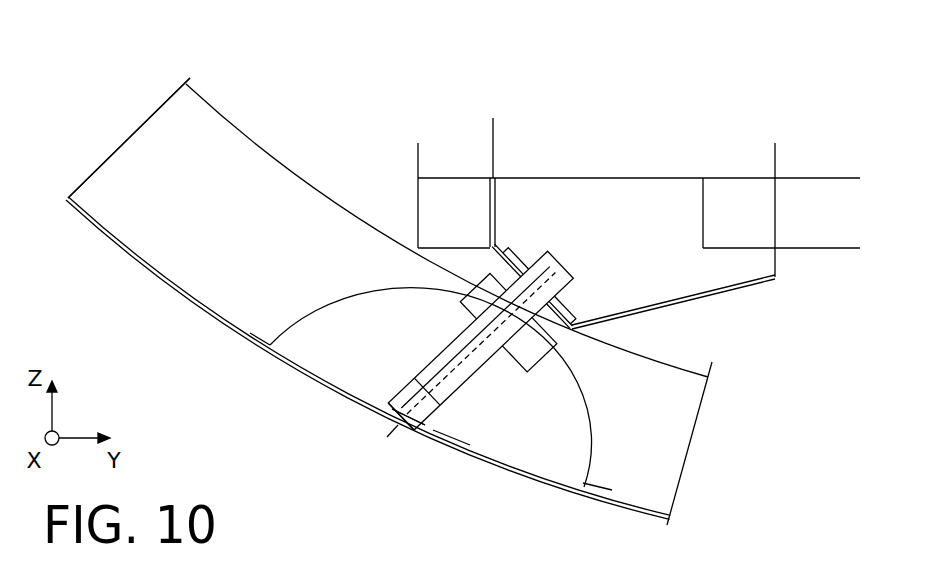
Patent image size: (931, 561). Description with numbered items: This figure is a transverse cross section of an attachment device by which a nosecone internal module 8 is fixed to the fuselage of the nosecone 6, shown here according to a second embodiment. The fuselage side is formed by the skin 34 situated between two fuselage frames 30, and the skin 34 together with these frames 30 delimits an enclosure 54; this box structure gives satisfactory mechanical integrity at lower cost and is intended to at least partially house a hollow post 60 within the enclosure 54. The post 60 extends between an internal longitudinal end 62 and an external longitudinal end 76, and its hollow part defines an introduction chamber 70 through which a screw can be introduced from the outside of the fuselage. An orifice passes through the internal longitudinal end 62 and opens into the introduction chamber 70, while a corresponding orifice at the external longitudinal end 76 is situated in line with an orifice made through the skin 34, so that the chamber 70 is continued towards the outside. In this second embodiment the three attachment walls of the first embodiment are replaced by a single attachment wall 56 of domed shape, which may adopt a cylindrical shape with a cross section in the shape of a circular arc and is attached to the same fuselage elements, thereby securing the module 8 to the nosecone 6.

The nosecone 6 is at (122, 118).
The nosecone internal module 8 is at (672, 116).
The fuselage frame 30 is at (200, 282).
The skin 34 is at (66, 206).
The enclosure 54 is at (358, 341).
The single attachment wall 56 is at (437, 277).
The hollow post 60 is at (485, 382).
The internal longitudinal end 62 is at (560, 350).
The introduction chamber 70 is at (453, 362).
The external longitudinal end 76 is at (380, 400).